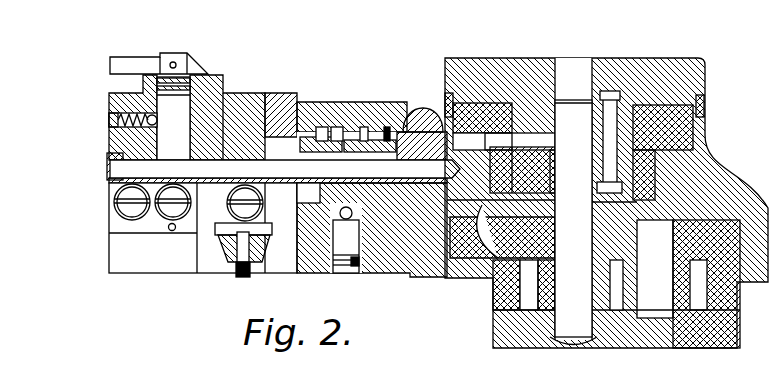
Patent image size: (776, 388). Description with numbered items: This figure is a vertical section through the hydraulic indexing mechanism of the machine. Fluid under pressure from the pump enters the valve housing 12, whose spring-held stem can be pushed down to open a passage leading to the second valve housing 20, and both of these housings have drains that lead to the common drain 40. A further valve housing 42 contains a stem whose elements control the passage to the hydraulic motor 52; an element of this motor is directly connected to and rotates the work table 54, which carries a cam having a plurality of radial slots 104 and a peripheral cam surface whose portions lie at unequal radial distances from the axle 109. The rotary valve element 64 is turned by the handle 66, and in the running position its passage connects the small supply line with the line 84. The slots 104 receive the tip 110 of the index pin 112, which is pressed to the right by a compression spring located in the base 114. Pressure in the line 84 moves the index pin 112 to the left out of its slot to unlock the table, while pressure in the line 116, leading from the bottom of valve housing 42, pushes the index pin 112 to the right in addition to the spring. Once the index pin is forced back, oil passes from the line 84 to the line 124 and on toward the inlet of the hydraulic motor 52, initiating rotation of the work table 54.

The valve housing 12 is at (122, 213).
The second valve housing 20 is at (161, 222).
The drain 40 is at (352, 273).
The valve housing 42 is at (258, 215).
The hydraulic motor 52 is at (612, 300).
The work table 54 is at (657, 58).
The valve element 64 is at (178, 120).
The handle 66 is at (128, 62).
The line 84 is at (399, 132).
The radial slots 104 is at (493, 268).
The axle 109 is at (562, 320).
The tip 110 is at (483, 215).
The index pin 112 is at (431, 145).
The base 114 is at (110, 180).
The line 116 is at (322, 126).
The line 124 is at (367, 127).